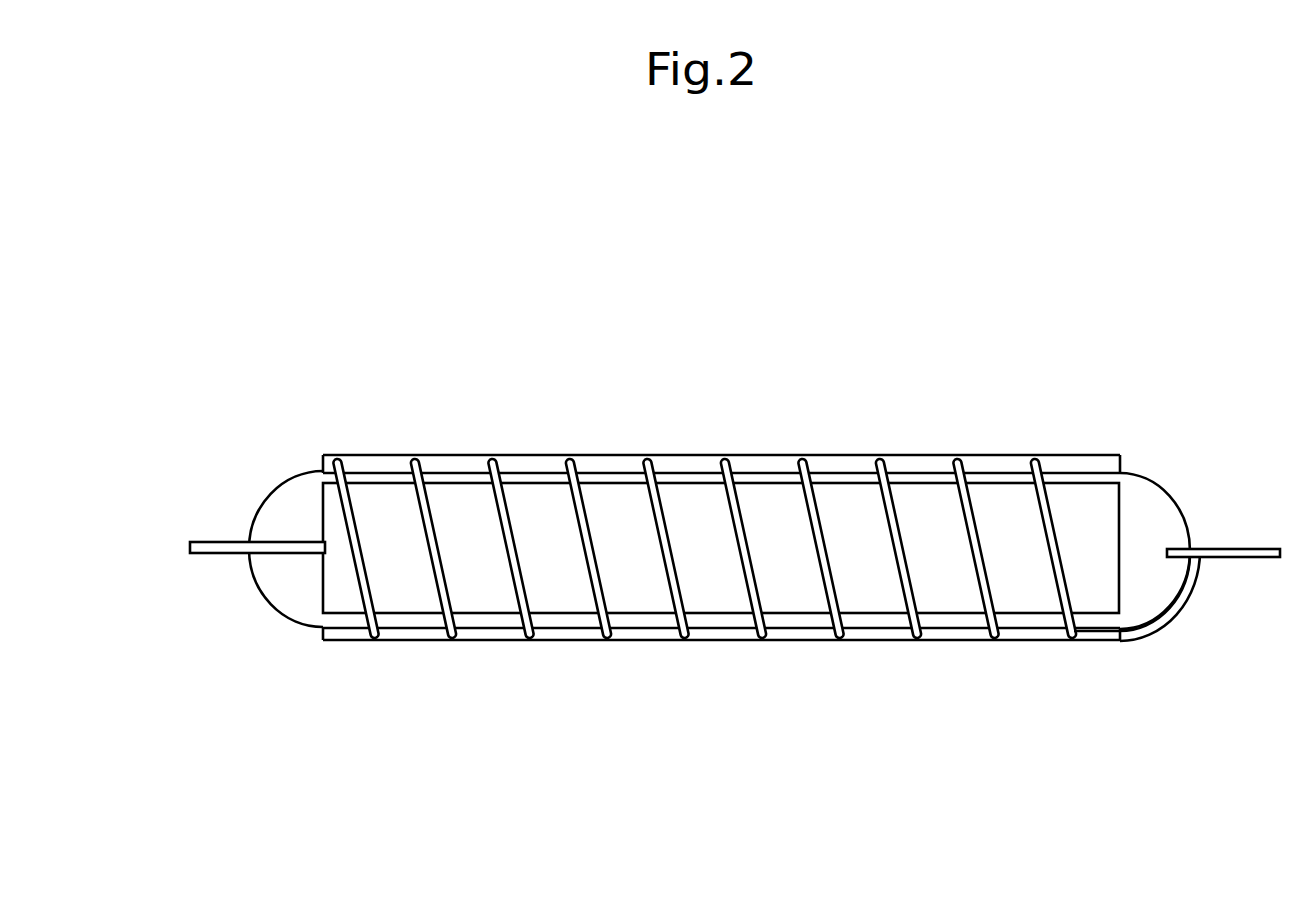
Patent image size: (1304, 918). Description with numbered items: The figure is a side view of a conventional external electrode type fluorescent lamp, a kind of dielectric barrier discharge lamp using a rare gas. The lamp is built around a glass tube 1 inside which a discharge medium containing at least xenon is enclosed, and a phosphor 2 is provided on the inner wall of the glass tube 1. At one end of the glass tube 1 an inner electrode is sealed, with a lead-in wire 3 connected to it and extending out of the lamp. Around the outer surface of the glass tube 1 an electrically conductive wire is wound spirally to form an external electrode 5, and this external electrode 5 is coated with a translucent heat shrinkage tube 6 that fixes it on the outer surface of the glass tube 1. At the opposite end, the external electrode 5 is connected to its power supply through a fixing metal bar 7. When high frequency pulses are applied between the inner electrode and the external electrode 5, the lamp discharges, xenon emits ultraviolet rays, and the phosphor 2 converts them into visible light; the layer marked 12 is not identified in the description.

The glass tube 1 is at (292, 593).
The phosphor 2 is at (785, 592).
The lead-in wire 3 is at (225, 541).
The external electrode 5 is at (1057, 527).
The translucent heat shrinkage tube 6 is at (527, 455).
The fixing metal bar 7 is at (1240, 548).
The inner coating layer 12 is at (868, 457).